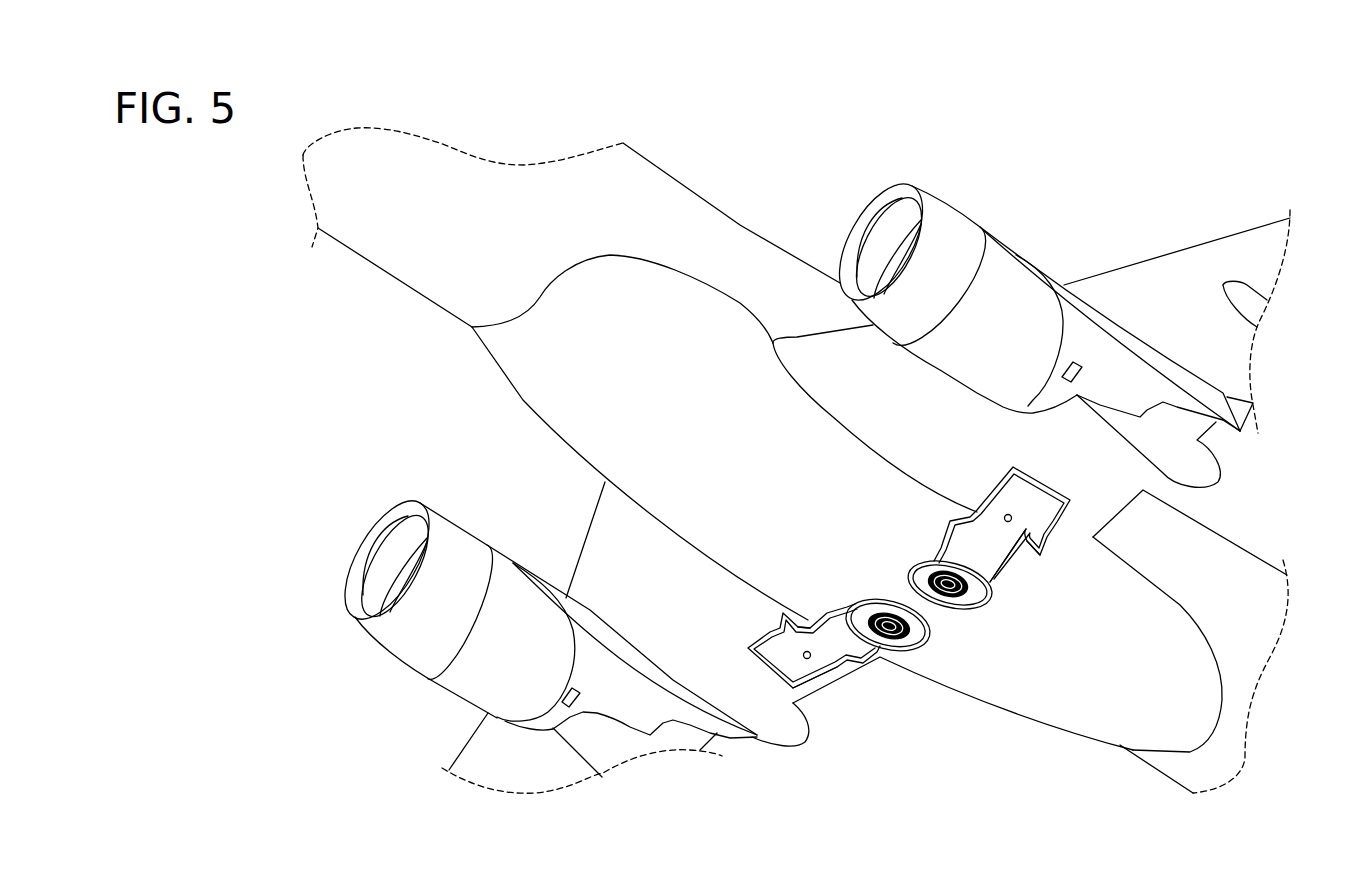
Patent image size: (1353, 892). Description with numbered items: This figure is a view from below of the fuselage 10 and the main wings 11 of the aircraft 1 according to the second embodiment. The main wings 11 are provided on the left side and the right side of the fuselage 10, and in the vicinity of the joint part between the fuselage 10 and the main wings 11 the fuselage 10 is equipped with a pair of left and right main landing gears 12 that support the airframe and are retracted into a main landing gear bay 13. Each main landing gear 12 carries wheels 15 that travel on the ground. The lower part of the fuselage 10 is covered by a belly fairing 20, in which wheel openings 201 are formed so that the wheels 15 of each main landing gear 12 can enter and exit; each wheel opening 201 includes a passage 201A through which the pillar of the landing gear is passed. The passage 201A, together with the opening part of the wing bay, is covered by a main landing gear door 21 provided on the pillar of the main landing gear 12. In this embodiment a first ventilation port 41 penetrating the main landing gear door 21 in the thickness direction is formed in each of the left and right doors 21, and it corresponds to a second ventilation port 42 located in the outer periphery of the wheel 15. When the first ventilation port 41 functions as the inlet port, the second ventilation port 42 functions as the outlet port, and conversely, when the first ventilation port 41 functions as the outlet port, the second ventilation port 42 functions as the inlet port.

The aircraft 1 is at (848, 128).
The fuselage 10 is at (685, 186).
The main wing 11 is at (1205, 240).
The main landing gear 12 is at (824, 594).
The main landing gear bay 13 is at (960, 630).
The wheel 15 is at (883, 602).
The belly fairing 20 is at (1097, 740).
The main landing gear door 21 is at (748, 643).
The first ventilation port 41 is at (1012, 514).
The second ventilation port 42 is at (860, 605).
The wheel opening 201 is at (893, 660).
The passage 201A is at (803, 610).